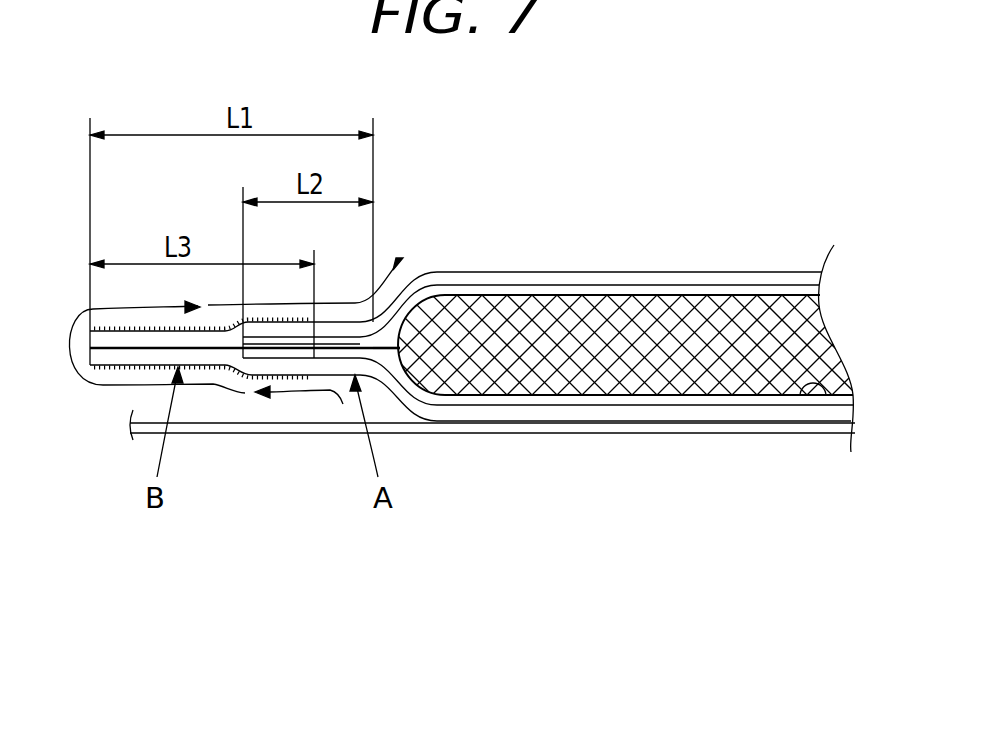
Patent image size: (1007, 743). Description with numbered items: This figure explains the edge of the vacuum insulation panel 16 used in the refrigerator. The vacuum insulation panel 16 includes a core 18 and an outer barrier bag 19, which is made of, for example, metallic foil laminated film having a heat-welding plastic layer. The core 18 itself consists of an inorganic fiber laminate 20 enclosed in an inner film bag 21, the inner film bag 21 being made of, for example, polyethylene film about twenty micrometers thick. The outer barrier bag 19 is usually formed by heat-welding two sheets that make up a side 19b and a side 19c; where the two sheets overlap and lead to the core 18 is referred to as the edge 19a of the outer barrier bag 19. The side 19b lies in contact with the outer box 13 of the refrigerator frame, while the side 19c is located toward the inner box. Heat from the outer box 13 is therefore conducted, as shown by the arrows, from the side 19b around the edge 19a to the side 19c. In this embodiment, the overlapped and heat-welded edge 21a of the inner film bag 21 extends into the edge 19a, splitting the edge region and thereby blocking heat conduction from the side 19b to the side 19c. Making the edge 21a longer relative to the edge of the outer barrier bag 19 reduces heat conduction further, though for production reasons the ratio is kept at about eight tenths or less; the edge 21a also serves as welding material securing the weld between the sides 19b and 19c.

The outer box 13 is at (453, 433).
The vacuum insulation panel 16 is at (462, 267).
The core 18 is at (762, 385).
The outer barrier bag 19 is at (453, 339).
The edge 19a is at (130, 348).
The side 19b is at (524, 412).
The side 19c is at (685, 270).
The inorganic fiber laminate 20 is at (612, 383).
The inner film bag 21 is at (580, 295).
The edge 21a is at (343, 352).